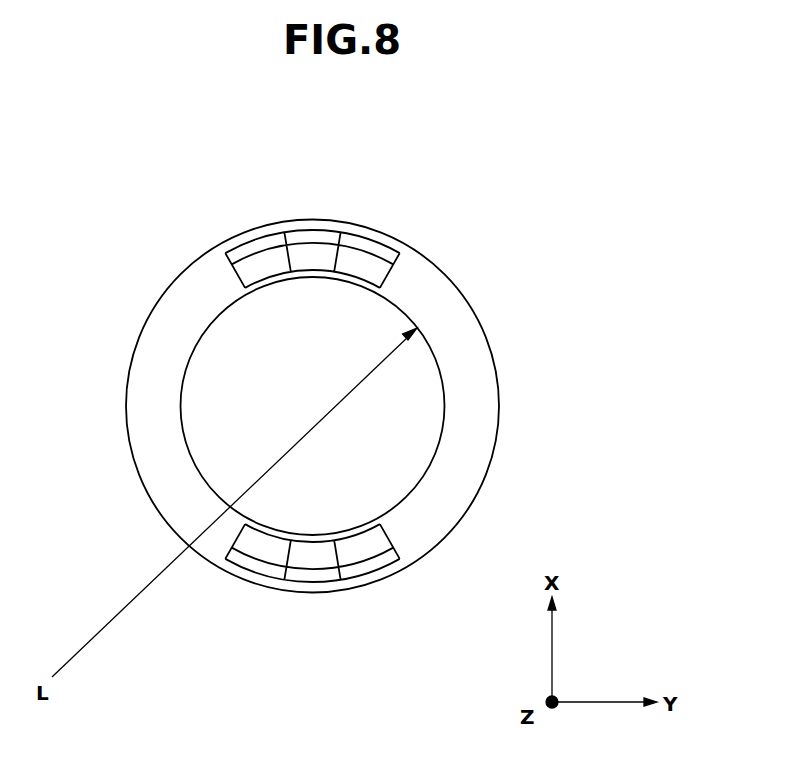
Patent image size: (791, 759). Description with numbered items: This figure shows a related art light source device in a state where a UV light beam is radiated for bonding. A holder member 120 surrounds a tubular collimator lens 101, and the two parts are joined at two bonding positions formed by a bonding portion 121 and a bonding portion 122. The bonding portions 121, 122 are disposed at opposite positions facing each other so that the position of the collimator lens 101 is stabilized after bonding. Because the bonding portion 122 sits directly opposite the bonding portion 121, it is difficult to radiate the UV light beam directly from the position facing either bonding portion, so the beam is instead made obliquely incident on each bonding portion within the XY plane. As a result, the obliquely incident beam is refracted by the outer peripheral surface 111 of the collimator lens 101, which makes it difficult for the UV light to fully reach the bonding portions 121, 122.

The collimator lens 101 is at (217, 353).
The outer peripheral surface 111 is at (181, 412).
The holder member 120 is at (500, 397).
The bonding portion 121 is at (311, 253).
The bonding portion 122 is at (315, 560).